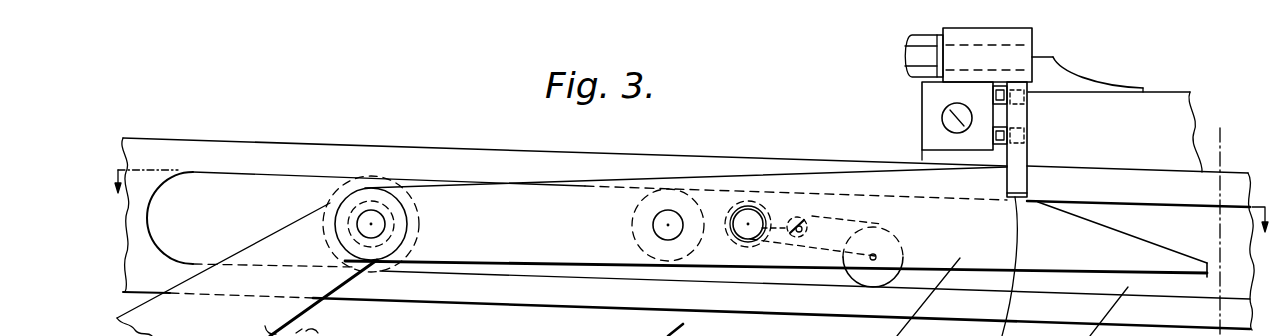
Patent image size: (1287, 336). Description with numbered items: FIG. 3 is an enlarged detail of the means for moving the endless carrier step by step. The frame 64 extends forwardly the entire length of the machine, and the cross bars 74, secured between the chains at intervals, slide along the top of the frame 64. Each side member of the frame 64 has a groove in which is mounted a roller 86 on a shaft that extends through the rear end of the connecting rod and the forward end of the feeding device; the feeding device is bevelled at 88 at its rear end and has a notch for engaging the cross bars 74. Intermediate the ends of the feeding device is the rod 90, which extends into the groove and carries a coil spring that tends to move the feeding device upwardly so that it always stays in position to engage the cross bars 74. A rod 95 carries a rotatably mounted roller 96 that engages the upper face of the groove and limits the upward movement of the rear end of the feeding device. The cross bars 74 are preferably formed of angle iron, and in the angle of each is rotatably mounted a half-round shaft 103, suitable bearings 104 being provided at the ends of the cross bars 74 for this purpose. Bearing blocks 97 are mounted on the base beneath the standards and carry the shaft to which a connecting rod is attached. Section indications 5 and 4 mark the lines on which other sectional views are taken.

The frame 64 is at (198, 150).
The roller 86 is at (350, 186).
The roller 96 is at (655, 195).
The rod 95 is at (670, 221).
The rod 90 is at (749, 222).
The bearing blocks 97 is at (807, 217).
The cross bars 74 is at (924, 160).
The half-round shaft 103 is at (950, 117).
The bearings 104 is at (922, 92).
The bevelled rear end 88 is at (1143, 250).
The section line 5 is at (1248, 106).
The section line 4 is at (1260, 234).